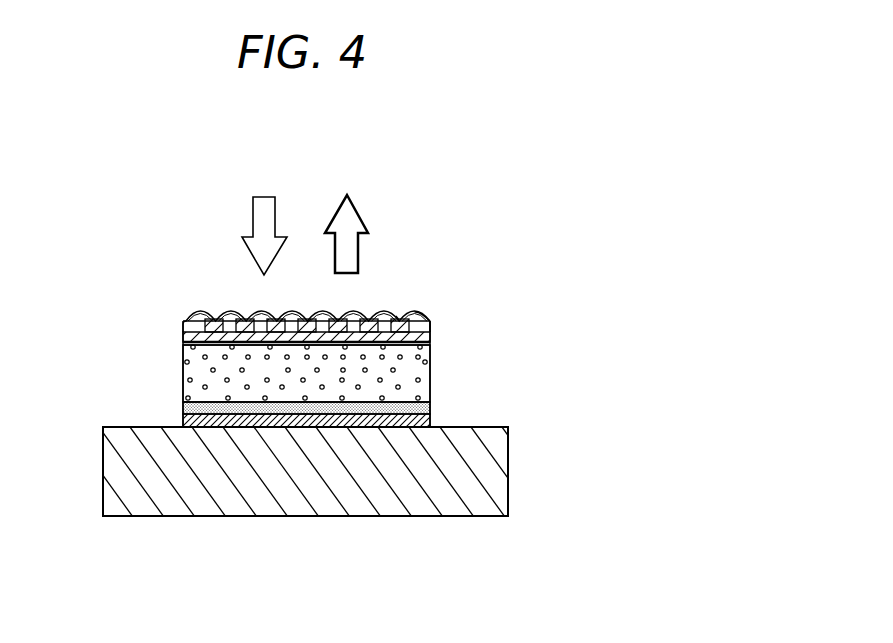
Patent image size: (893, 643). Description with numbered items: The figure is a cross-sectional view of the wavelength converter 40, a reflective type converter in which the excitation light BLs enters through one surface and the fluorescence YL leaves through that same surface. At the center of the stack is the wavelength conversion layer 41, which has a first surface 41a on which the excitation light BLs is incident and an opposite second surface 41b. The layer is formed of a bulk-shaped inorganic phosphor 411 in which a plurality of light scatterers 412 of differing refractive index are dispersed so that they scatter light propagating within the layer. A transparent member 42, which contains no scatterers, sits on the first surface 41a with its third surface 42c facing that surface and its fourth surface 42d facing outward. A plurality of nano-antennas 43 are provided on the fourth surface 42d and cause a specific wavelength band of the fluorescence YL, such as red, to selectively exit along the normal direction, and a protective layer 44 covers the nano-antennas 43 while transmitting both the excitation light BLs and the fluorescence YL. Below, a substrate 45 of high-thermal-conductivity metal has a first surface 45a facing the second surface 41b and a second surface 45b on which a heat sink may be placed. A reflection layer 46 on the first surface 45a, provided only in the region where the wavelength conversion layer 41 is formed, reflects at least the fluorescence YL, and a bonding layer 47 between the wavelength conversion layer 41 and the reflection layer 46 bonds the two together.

The wavelength converter 40 is at (307, 218).
The wavelength conversion layer 41 is at (384, 415).
The inorganic phosphor 411 is at (425, 365).
The light scatterers 412 is at (418, 383).
The first surface 41a is at (418, 322).
The second surface 41b is at (308, 405).
The transparent member 42 is at (183, 338).
The third surface 42c is at (188, 348).
The fourth surface 42d is at (193, 320).
The nano-antennas 43 is at (397, 317).
The protective layer 44 is at (200, 317).
The substrate 45 is at (495, 473).
The first surface 45a is at (492, 427).
The second surface 45b is at (482, 517).
The reflection layer 46 is at (187, 420).
The bonding layer 47 is at (188, 407).
The excitation light BLs is at (258, 215).
The fluorescence YL is at (347, 217).